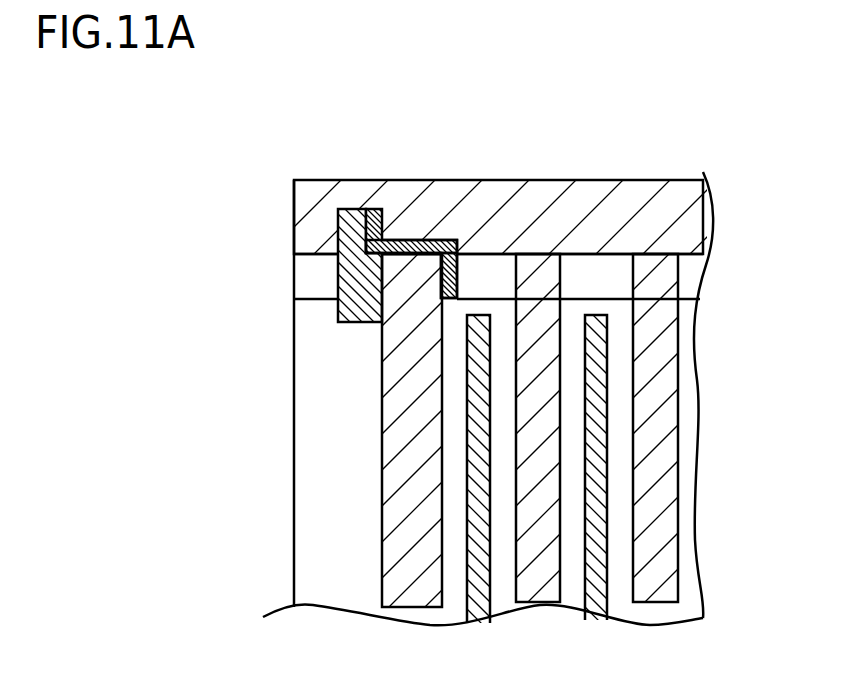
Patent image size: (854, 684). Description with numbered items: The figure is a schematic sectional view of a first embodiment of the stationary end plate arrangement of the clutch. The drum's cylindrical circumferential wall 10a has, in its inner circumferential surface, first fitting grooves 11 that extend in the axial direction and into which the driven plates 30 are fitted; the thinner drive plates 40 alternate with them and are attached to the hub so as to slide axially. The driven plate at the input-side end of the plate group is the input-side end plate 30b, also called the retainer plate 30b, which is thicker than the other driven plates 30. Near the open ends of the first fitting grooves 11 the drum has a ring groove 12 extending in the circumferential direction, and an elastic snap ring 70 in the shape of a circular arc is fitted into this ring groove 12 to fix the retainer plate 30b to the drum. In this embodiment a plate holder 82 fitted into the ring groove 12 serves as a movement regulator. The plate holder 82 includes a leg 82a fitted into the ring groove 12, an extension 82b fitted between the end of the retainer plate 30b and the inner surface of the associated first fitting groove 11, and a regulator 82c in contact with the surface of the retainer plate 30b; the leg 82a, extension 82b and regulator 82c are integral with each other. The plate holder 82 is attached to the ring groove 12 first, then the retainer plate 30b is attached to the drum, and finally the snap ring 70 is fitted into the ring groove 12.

The circumferential wall 10a is at (614, 196).
The first fitting groove 11 is at (595, 259).
The ring groove 12 is at (353, 214).
The snap ring 70 is at (343, 310).
The plate holder 82 is at (408, 178).
The leg 82a is at (388, 215).
The extension 82b is at (437, 240).
The regulator 82c is at (485, 208).
The driven plate 30 is at (665, 346).
The input-side end plate (retainer plate) 30b is at (417, 598).
The drive plate 40 is at (598, 608).